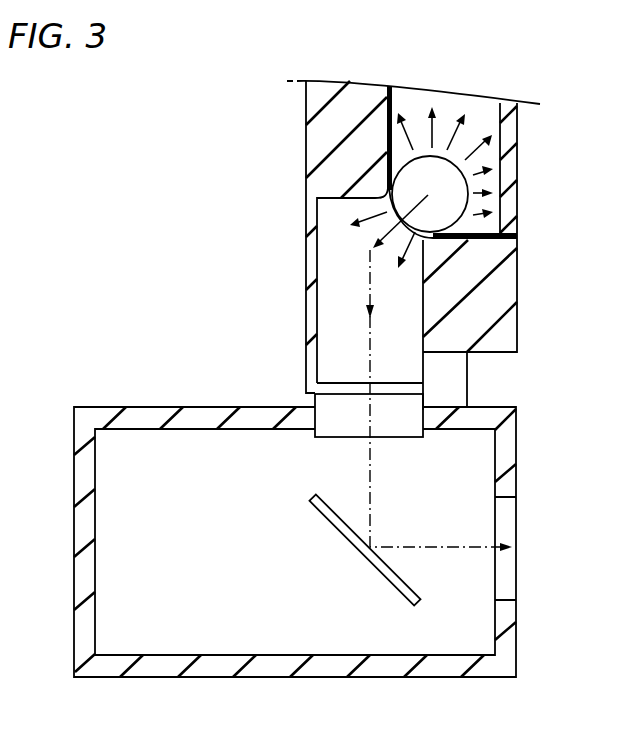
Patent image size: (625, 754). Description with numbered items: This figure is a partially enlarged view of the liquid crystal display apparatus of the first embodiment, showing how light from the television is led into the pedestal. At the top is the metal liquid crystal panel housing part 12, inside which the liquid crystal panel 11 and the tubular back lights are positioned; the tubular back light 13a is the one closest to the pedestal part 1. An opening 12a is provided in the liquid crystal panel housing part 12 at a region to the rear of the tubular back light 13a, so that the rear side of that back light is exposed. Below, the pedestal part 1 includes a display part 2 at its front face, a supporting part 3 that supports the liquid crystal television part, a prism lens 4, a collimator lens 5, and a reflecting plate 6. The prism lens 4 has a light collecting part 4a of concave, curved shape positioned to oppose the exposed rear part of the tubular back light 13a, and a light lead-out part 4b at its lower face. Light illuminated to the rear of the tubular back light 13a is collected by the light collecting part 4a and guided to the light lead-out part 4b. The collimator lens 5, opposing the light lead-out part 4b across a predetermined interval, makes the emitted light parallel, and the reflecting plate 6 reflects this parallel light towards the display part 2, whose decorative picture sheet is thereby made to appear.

The pedestal part 1 is at (510, 483).
The display part 2 is at (510, 567).
The supporting part 3 is at (457, 383).
The prism lens 4 is at (322, 305).
The light collecting part 4a is at (388, 191).
The light lead-out part 4b is at (316, 396).
The collimator lens 5 is at (331, 418).
The reflecting plate 6 is at (365, 550).
The liquid crystal panel 11 is at (517, 208).
The liquid crystal panel housing part 12 is at (387, 140).
The opening 12a is at (447, 218).
The tubular back light 13a is at (434, 240).